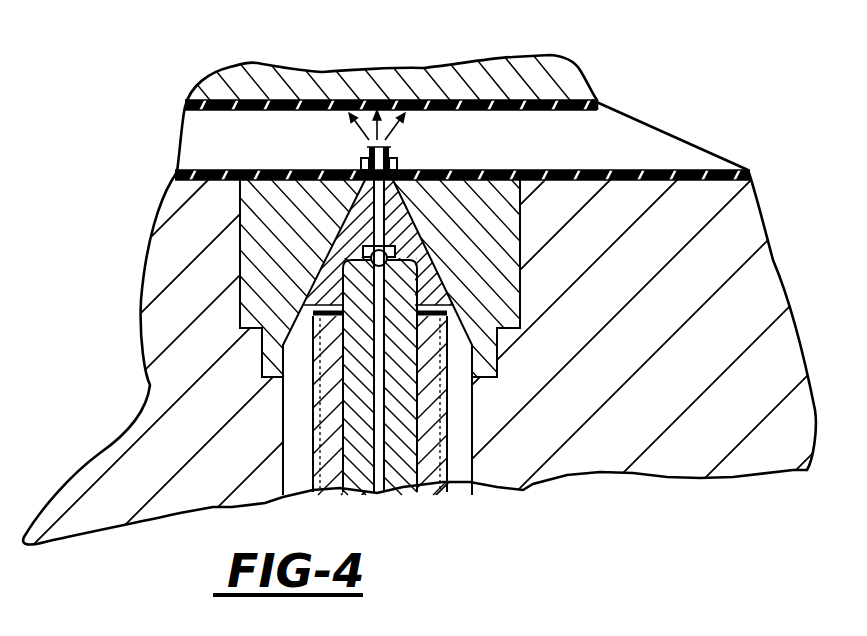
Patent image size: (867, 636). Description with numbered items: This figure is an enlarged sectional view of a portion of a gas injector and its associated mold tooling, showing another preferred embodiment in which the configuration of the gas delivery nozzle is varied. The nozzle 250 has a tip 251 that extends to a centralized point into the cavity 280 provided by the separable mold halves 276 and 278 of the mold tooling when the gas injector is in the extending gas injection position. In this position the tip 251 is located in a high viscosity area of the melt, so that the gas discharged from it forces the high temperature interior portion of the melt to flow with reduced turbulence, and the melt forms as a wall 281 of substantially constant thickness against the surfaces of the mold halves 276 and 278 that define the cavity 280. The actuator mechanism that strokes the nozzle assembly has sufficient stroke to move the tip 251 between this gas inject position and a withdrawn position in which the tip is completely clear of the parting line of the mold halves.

The nozzle 250 is at (405, 227).
The tip 251 is at (390, 148).
The mold half 276 is at (557, 84).
The mold half 278 is at (580, 450).
The cavity 280 is at (583, 143).
The wall 281 is at (625, 172).